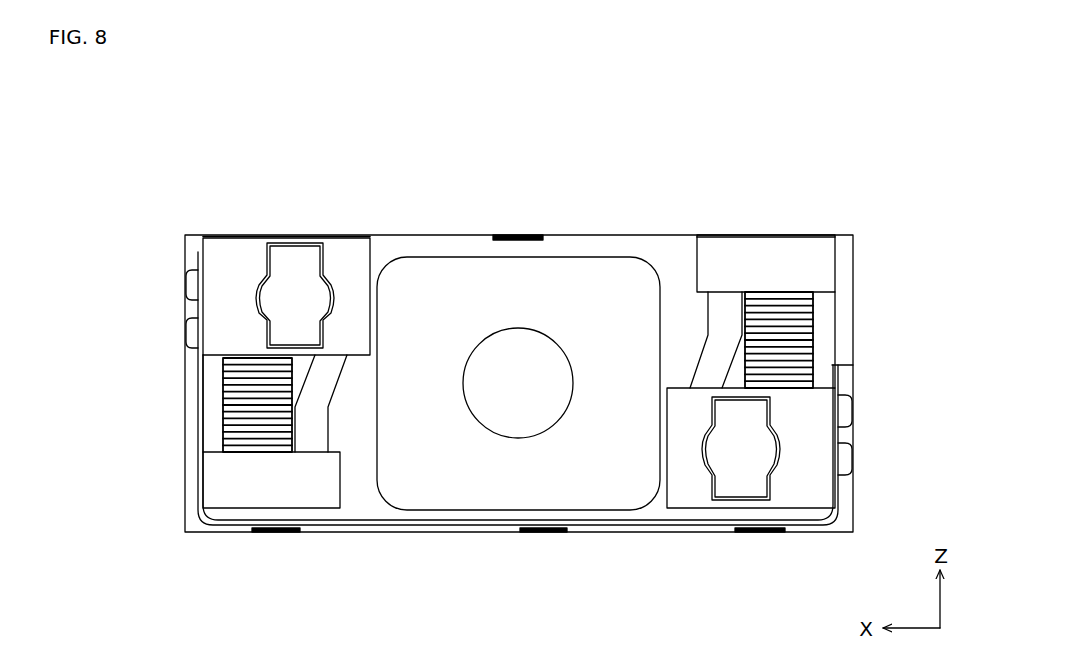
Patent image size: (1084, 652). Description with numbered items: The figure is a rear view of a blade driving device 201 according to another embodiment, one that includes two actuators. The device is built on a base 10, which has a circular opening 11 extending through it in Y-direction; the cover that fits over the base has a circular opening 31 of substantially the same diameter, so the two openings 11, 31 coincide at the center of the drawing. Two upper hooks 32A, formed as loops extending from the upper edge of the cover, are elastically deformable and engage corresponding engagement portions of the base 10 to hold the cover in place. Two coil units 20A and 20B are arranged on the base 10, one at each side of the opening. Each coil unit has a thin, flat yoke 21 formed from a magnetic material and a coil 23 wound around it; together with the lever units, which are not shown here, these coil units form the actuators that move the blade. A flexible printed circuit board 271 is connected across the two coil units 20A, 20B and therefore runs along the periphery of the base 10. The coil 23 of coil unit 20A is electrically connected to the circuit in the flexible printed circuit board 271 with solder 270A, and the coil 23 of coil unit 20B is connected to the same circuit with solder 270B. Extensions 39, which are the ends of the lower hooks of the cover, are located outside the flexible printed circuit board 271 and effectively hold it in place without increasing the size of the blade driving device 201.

The blade driving device 201 is at (776, 137).
The base 10 is at (412, 243).
The circular opening 11 is at (500, 309).
The circular opening 31 is at (505, 350).
The upper hook 32A is at (277, 235).
The coil unit 20A is at (351, 473).
The coil unit 20B is at (681, 262).
The yoke 21 is at (323, 387).
The coil 23 is at (223, 410).
The flexible printed circuit board 271 is at (442, 533).
The solder 270A is at (192, 285).
The solder 270B is at (846, 412).
The extension 39 is at (277, 533).